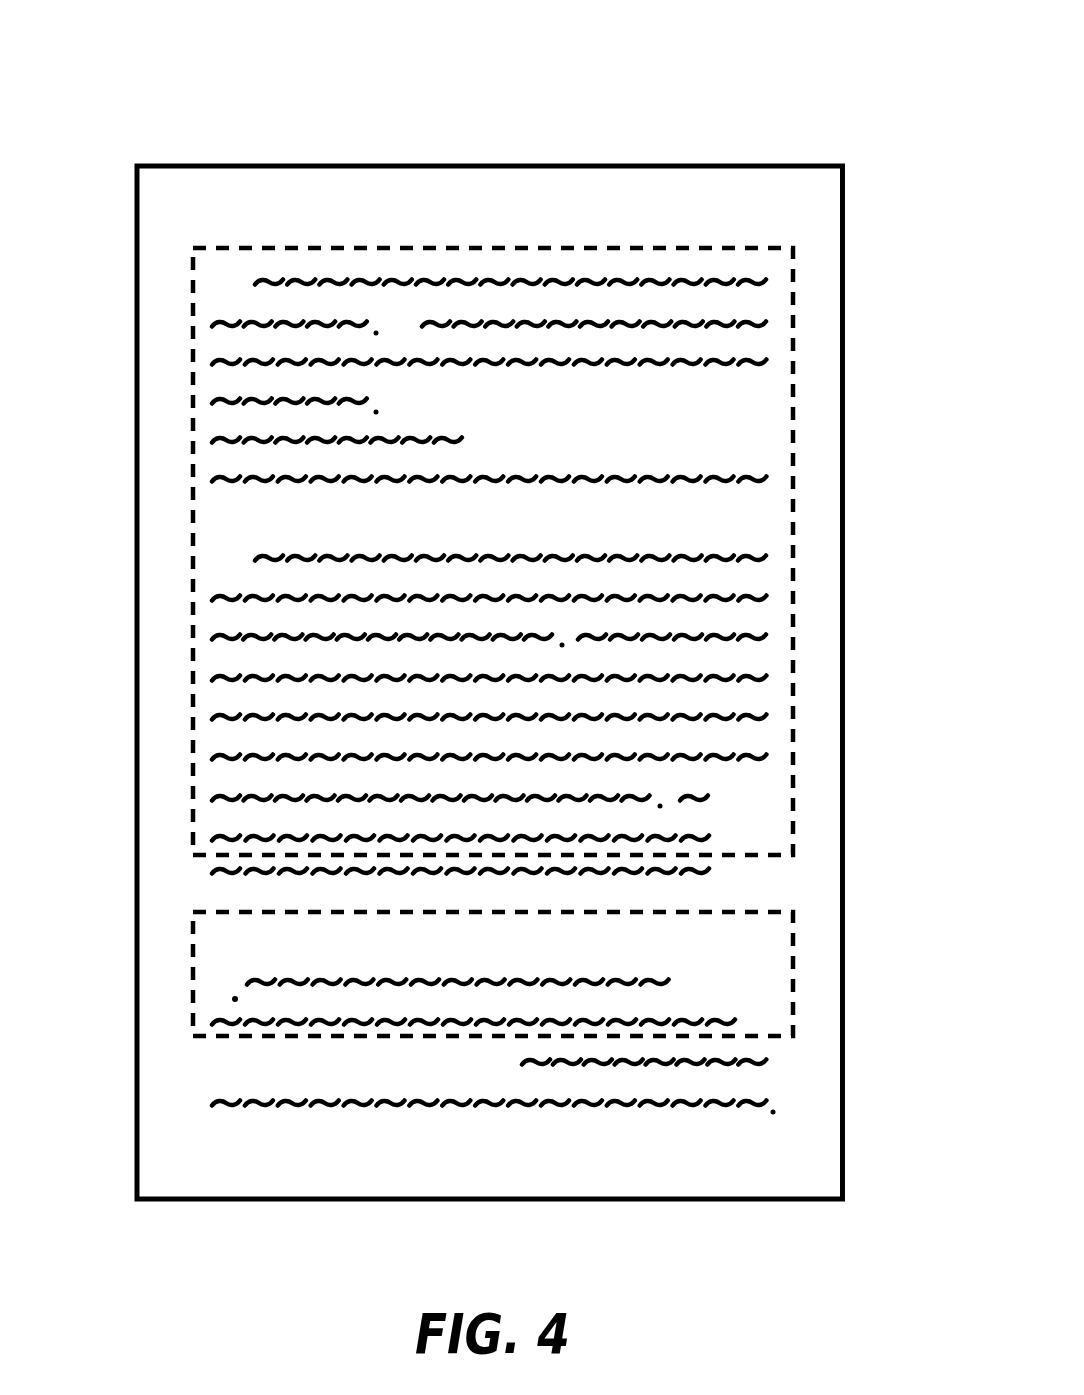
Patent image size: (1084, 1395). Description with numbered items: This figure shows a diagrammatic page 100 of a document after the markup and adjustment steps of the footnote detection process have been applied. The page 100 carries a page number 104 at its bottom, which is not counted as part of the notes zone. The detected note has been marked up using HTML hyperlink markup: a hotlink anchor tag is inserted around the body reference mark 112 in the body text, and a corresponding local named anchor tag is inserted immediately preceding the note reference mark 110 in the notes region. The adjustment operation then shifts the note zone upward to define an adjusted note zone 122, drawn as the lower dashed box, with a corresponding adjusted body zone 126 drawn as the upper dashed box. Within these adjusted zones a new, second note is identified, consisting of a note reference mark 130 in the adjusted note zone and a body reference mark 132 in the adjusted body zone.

The page 100 is at (850, 73).
The page number 104 is at (456, 1187).
The note reference mark "3" 110 is at (545, 1096).
The body reference mark "3" 112 is at (645, 362).
The adjusted note zone 122 is at (795, 951).
The adjusted body zone 126 is at (795, 552).
The note reference mark "2" 130 is at (191, 1004).
The body reference mark "2" 132 is at (375, 284).